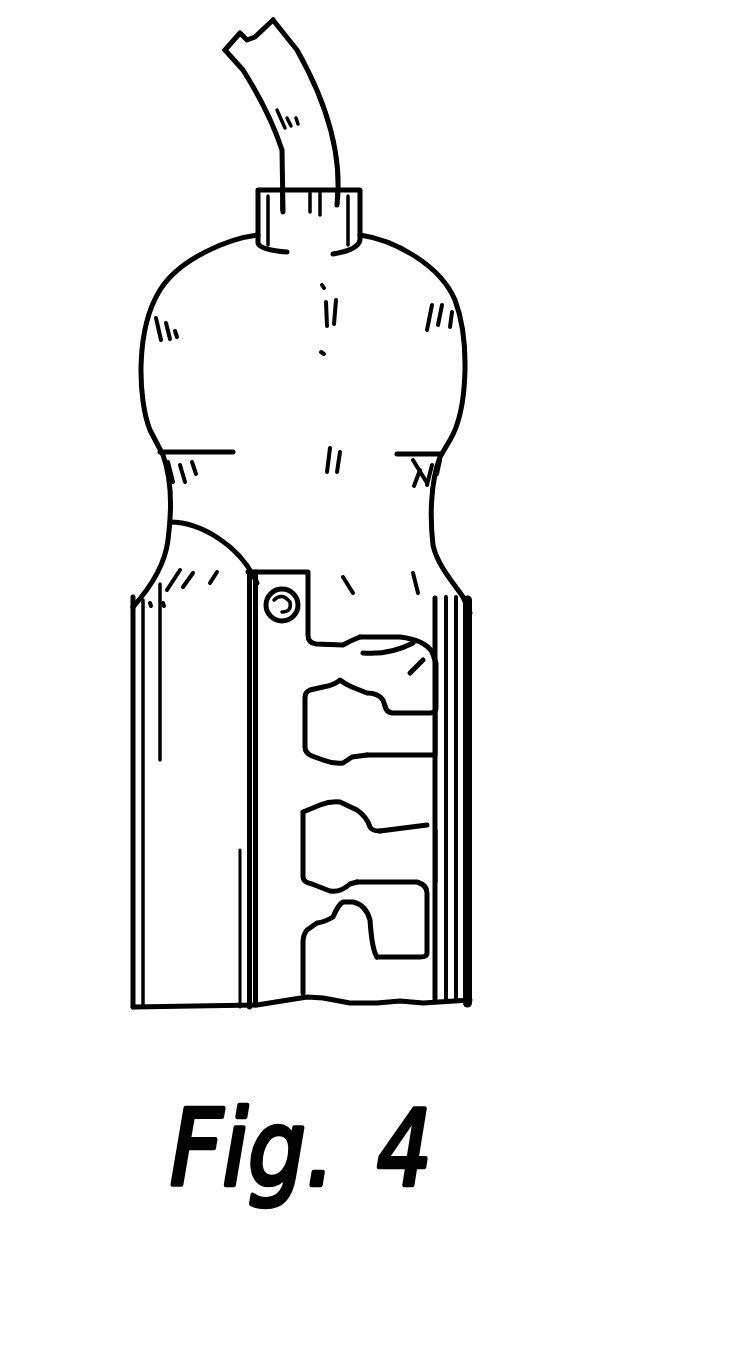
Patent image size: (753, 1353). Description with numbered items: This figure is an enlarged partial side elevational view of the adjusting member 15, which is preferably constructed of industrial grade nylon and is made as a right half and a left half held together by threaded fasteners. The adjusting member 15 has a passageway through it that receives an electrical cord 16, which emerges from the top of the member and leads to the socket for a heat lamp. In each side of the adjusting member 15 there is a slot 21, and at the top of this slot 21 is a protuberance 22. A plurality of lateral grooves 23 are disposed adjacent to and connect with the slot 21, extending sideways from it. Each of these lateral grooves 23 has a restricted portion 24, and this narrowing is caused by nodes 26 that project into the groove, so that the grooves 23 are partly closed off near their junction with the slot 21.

The adjusting member 15 is at (171, 785).
The electrical cord 16 is at (280, 77).
The slot 21 is at (244, 902).
The protuberance 22 is at (170, 522).
The lateral grooves 23 is at (468, 635).
The restricted portion 24 is at (407, 672).
The nodes 26 is at (323, 677).